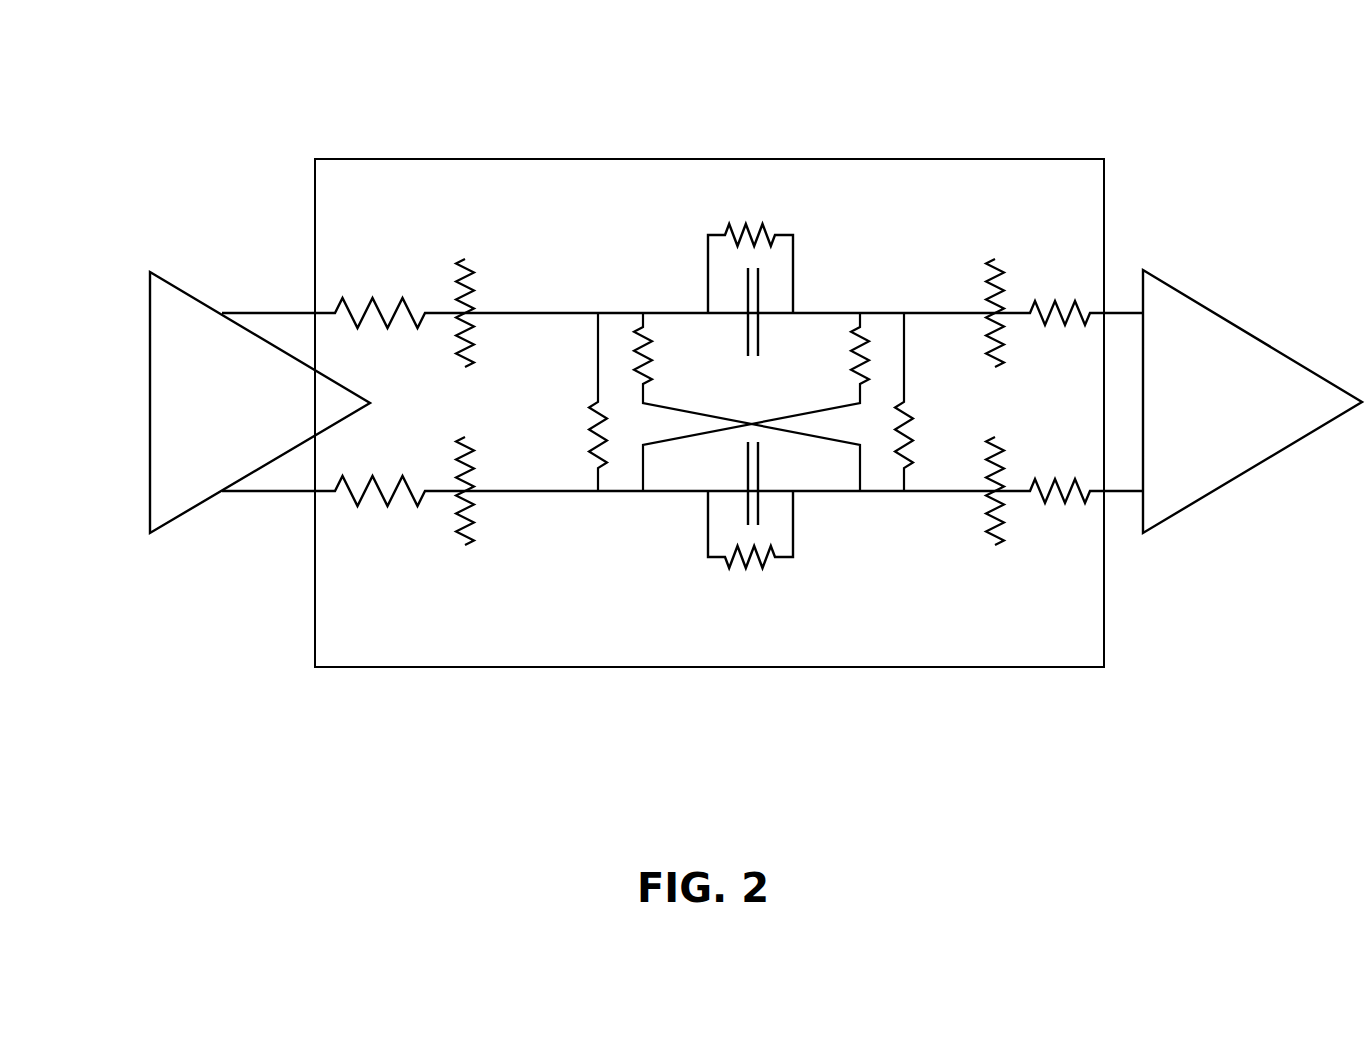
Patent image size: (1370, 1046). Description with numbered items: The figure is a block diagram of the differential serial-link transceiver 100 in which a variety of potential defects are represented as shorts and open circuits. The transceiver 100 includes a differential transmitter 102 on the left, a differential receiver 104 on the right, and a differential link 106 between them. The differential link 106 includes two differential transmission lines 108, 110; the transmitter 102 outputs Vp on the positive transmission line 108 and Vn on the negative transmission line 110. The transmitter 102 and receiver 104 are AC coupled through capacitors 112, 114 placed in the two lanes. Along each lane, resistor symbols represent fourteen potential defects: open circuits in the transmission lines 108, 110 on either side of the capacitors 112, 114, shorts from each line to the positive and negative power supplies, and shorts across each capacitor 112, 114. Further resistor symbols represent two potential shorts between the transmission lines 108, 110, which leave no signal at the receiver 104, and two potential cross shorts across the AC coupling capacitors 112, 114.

The transceiver 100 is at (406, 66).
The differential transmitter 102 is at (150, 368).
The differential receiver 104 is at (1232, 322).
The differential link 106 is at (1015, 158).
The differential transmission line 108 is at (558, 313).
The differential transmission line 110 is at (558, 491).
The capacitor 112 is at (758, 298).
The capacitor 114 is at (758, 493).